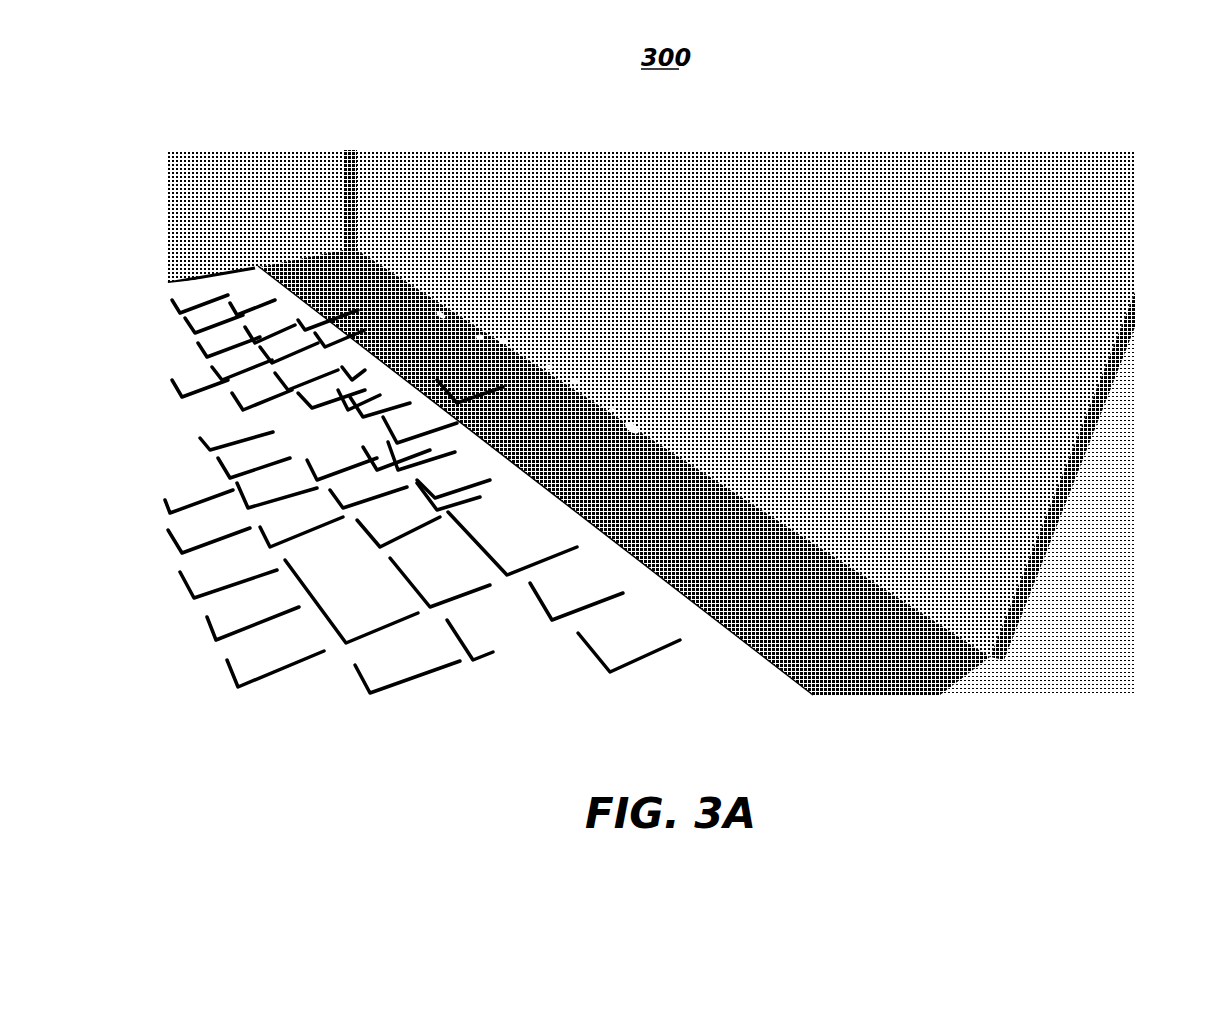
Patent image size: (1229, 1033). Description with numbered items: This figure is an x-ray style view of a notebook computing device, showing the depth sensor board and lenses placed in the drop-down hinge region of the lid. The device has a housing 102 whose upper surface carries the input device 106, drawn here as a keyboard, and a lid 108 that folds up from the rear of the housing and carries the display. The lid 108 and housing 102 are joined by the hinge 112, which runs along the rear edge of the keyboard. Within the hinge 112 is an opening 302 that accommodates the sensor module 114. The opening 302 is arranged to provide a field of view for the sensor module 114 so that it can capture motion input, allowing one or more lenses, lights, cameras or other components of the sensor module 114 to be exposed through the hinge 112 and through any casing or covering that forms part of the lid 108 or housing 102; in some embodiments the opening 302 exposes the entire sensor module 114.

The housing 102 is at (870, 665).
The input device 106 is at (378, 585).
The lid 108 is at (1060, 480).
The hinge 112 is at (813, 537).
The sensor module 114 is at (607, 405).
The opening 302 is at (647, 442).